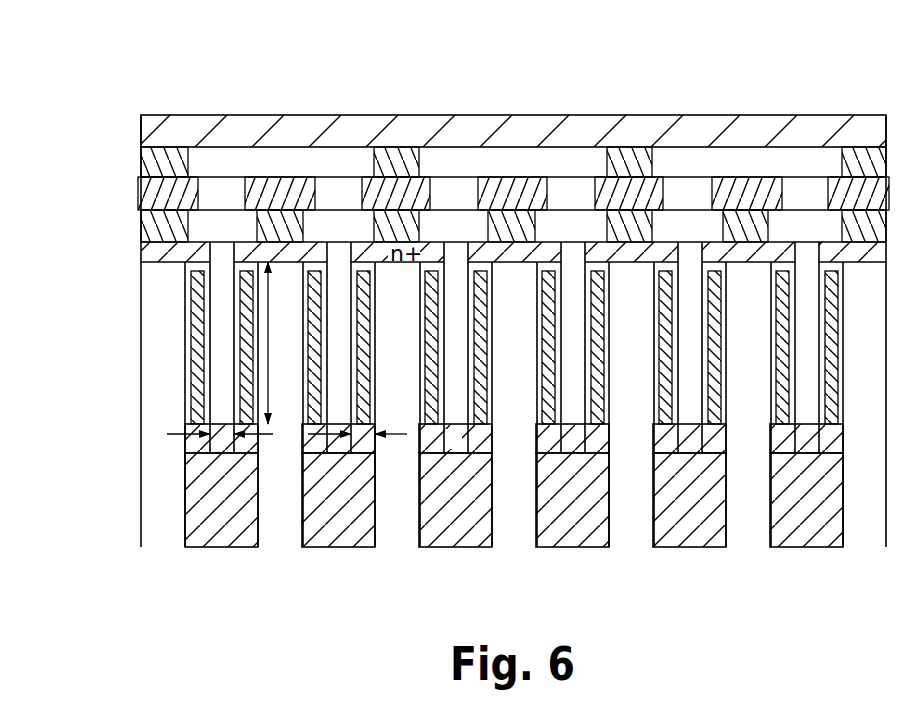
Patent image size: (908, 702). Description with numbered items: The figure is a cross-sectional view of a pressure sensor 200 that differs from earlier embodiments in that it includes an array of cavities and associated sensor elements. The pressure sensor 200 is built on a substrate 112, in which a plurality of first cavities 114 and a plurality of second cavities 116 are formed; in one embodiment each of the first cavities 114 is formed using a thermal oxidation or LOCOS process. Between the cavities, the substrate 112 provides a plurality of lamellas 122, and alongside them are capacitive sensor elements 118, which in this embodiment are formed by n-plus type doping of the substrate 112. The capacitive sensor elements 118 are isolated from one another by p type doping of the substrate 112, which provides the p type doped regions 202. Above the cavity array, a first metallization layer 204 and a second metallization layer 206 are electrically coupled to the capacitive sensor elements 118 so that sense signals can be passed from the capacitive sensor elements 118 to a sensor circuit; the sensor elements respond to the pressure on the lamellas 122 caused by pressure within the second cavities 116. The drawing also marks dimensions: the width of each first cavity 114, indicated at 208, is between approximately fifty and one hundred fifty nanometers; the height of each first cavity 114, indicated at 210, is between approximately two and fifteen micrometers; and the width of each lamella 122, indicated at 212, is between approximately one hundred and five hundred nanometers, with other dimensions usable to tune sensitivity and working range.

The pressure sensor 200 is at (686, 80).
The second metallization layer 206 is at (142, 131).
The first metallization layer 204 is at (140, 200).
The first cavities 114 is at (223, 297).
The capacitive sensor elements 118 is at (198, 316).
The lamellas 122 is at (190, 368).
The width of first cavity 208 is at (180, 434).
The p type doped regions 202 is at (188, 450).
The height of first cavity 210 is at (276, 421).
The width of lamella 212 is at (407, 434).
The second cavities 116 is at (160, 534).
The substrate 112 is at (796, 538).